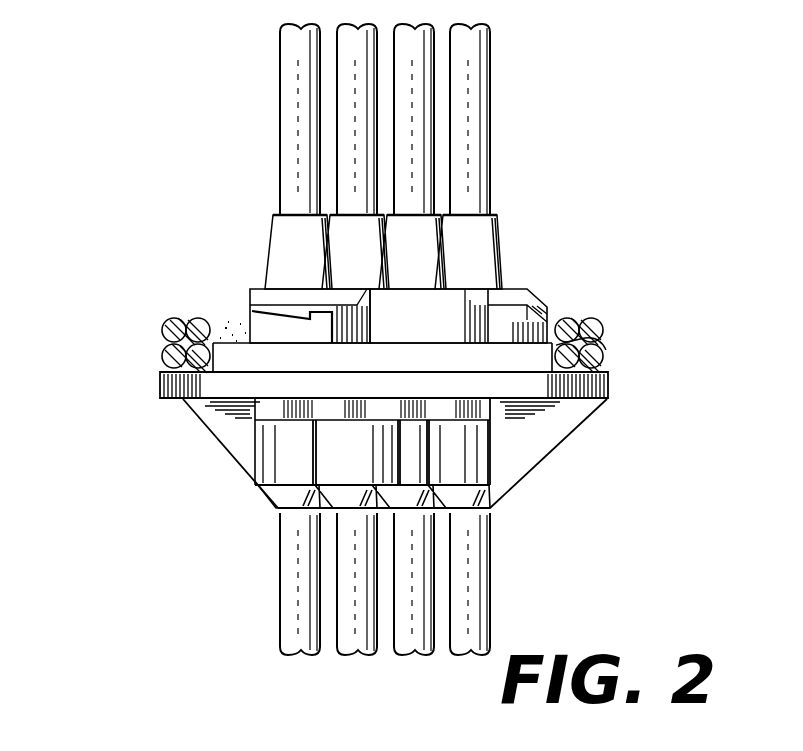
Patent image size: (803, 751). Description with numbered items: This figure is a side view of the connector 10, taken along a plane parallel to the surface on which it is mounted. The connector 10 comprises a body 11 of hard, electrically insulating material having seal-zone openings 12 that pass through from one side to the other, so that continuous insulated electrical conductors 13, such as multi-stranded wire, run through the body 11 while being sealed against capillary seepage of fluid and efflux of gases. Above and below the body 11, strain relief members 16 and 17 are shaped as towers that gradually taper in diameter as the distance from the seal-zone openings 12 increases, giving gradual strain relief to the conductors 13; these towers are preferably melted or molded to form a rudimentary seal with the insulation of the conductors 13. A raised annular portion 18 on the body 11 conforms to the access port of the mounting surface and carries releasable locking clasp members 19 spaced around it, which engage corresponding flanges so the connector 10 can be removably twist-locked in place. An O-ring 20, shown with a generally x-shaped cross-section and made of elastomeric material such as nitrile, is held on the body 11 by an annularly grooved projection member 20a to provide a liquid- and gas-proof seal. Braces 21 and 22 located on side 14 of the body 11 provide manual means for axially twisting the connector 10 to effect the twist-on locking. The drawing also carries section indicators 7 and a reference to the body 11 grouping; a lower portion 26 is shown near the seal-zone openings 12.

The section line 7- 7 is at (145, 382).
The connector 10 is at (722, 520).
The body 11 is at (68, 372).
The seal-zone openings 12 is at (283, 402).
The insulated electrical conductors 13 is at (470, 88).
The first side 14 is at (590, 400).
The strain relief member 16 is at (475, 494).
The strain relief member 17 is at (490, 225).
The raised annular portion 18 is at (430, 305).
The locking clasp members 19 is at (300, 310).
The O-ring 20 is at (600, 327).
The annularly grooved projection member 20a is at (604, 345).
The brace 21 is at (532, 437).
The brace 22 is at (205, 413).
The nut body 26 is at (330, 407).